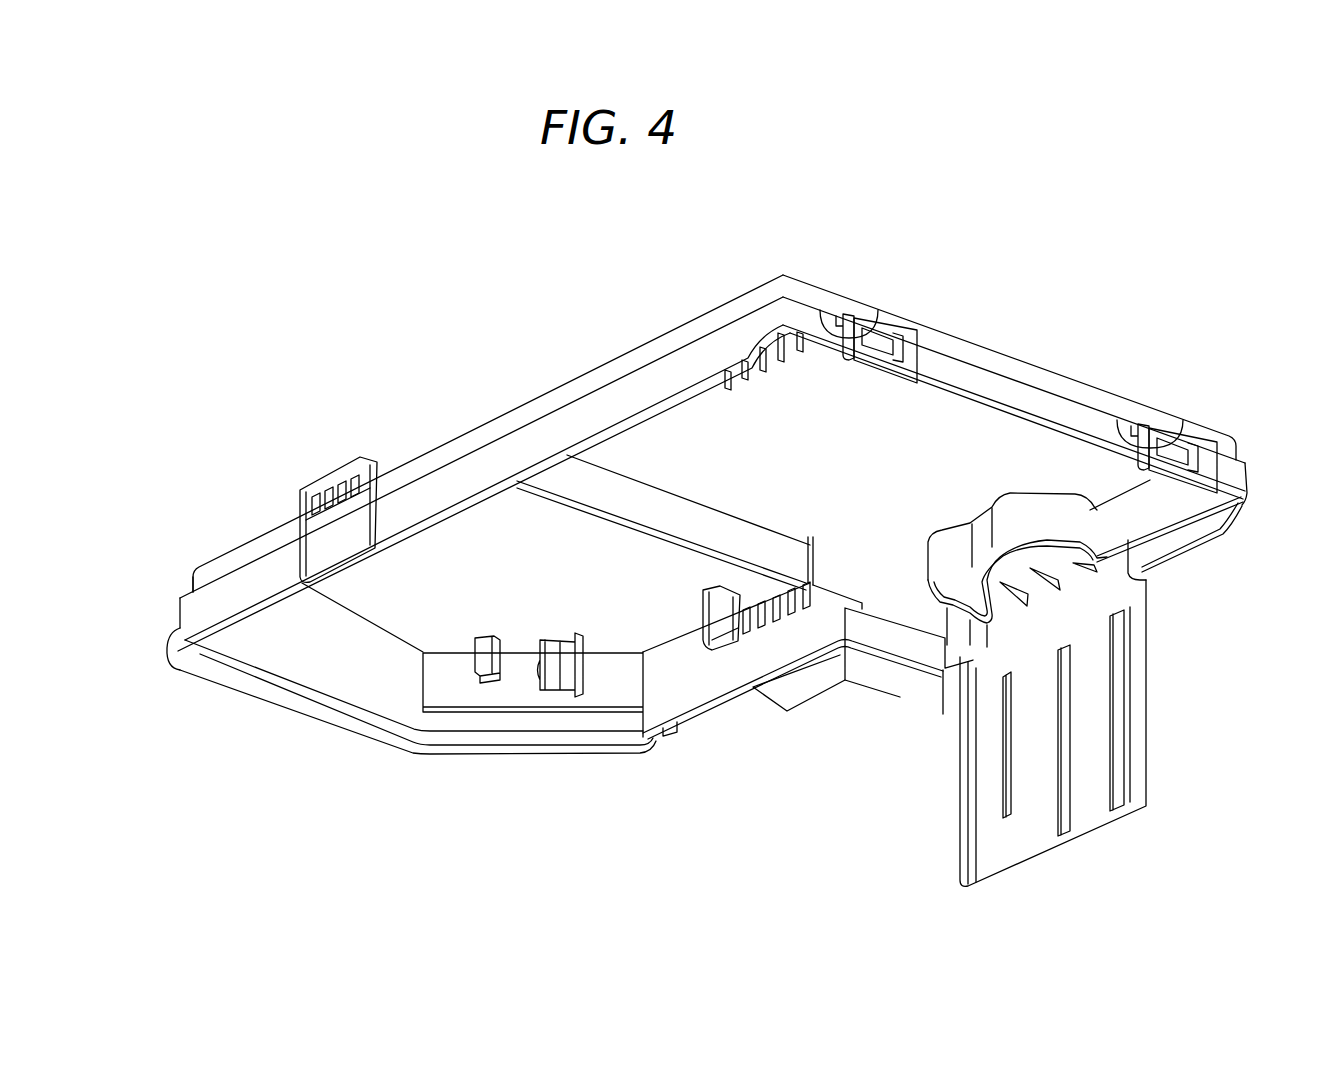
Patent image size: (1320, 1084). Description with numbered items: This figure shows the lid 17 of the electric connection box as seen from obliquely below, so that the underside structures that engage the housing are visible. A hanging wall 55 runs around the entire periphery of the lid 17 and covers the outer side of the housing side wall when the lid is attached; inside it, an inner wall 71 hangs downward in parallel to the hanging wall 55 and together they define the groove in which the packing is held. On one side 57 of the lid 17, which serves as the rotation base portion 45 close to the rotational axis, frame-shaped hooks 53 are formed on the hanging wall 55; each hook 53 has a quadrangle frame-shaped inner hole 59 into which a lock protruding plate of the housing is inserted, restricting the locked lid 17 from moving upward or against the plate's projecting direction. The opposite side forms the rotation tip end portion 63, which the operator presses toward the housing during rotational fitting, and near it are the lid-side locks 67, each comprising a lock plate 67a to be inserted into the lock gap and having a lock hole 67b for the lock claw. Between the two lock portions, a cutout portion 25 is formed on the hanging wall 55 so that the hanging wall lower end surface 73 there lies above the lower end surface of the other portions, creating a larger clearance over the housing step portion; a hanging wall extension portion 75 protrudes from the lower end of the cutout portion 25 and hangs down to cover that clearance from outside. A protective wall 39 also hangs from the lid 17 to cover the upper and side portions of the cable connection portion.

The lid 17 is at (214, 557).
The cutout portion 25 is at (300, 695).
The protective wall 39 is at (1150, 729).
The rotation base portion 45 is at (964, 368).
The hook 53 is at (830, 322).
The hanging wall 55 is at (522, 447).
The side 57 is at (1052, 382).
The inner hole 59 is at (870, 330).
The rotation tip end portion 63 is at (268, 709).
The lid-side lock 67 is at (342, 463).
The lock plate 67a is at (340, 528).
The lock hole 67b is at (333, 481).
The inner wall 71 is at (355, 690).
The hanging wall lower end surface 73 is at (657, 740).
The hanging wall extension portion 75 is at (204, 648).